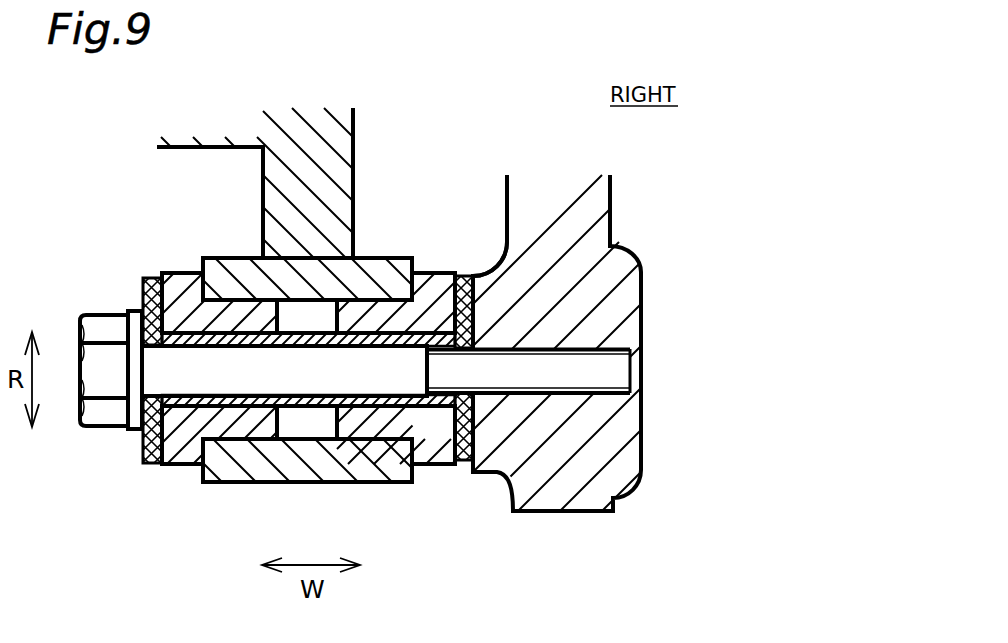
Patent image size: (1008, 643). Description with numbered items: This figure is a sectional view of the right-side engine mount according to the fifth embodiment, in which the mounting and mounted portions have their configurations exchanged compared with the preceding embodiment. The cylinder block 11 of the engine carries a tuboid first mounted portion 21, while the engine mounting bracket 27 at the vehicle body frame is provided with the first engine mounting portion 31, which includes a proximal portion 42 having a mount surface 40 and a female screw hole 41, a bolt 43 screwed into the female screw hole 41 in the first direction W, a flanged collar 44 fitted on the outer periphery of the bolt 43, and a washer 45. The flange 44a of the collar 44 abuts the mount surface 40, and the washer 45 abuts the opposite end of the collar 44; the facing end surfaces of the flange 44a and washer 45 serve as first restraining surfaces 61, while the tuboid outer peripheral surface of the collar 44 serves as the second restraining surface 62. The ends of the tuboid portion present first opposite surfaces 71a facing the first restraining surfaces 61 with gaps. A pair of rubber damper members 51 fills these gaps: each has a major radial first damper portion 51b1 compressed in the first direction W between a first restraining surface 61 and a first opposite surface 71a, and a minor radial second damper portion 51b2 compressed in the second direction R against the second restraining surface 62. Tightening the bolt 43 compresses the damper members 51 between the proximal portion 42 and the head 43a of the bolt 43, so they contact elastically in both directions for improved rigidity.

The cylinder block 11 is at (258, 129).
The first mounted portion 21 is at (240, 478).
The engine mounting bracket 27 is at (575, 222).
The first engine mounting portion 31 is at (363, 393).
The mount surface 40 is at (544, 181).
The female screw hole 41 is at (557, 385).
The proximal portion 42 is at (493, 447).
The bolt 43 is at (505, 378).
The head of the bolt 43a is at (82, 425).
The flanged collar 44 is at (260, 340).
The flange of the collar 44a is at (478, 280).
The washer 45 is at (146, 279).
The rubber damper member 51 is at (183, 457).
The first damper portion 51b1 is at (179, 275).
The second damper portion 51b2 is at (205, 340).
The first restraining surface 61 is at (144, 298).
The second restraining surface 62 is at (298, 334).
The first opposite surface 71a is at (206, 262).